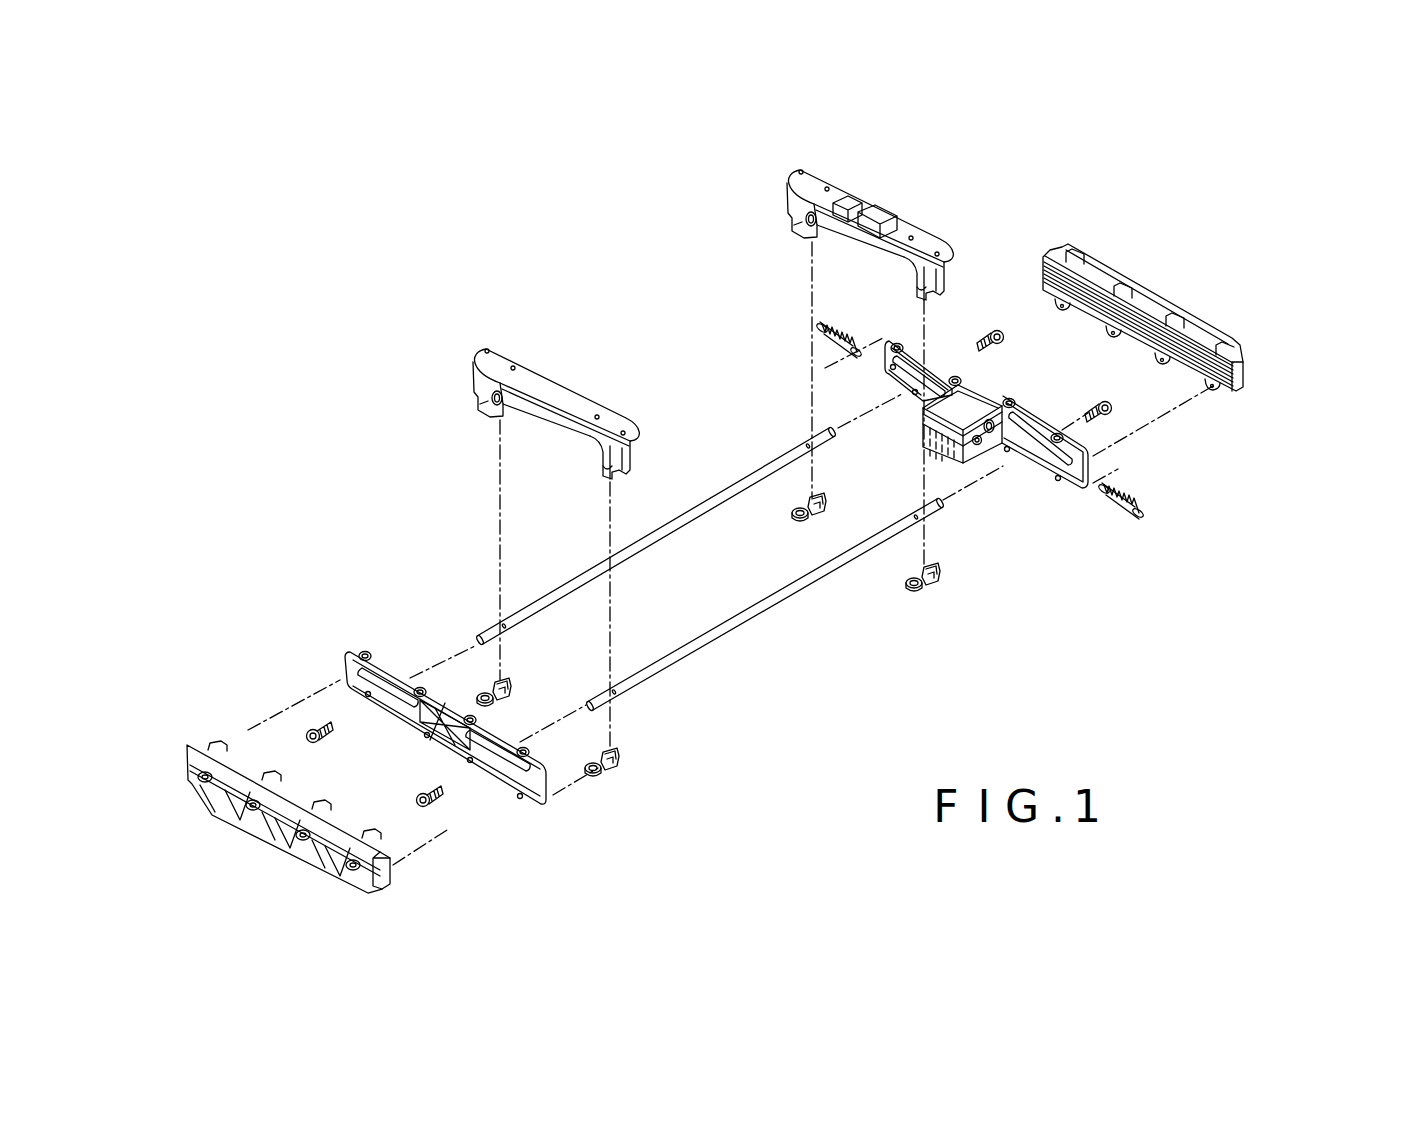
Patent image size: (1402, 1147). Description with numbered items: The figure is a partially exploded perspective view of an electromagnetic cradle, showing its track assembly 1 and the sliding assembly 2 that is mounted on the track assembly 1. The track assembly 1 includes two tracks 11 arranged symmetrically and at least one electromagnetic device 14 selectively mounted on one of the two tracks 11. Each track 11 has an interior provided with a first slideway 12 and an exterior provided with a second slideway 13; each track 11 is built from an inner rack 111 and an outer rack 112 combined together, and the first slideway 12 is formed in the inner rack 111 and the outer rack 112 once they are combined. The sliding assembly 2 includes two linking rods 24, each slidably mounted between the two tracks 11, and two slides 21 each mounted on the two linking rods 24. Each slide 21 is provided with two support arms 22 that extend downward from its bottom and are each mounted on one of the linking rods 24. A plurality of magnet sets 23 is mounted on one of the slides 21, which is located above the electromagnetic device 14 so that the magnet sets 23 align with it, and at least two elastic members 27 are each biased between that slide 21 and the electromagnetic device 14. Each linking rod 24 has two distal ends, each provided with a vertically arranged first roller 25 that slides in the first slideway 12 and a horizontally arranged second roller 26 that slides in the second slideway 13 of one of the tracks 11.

The track assembly 1 is at (765, 522).
The sliding assembly 2 is at (735, 520).
The track 11 is at (765, 568).
The first slideway 12 is at (1197, 357).
The second slideway 13 is at (1040, 473).
The electromagnetic device 14 is at (972, 455).
The slide 21 is at (647, 315).
The support arm 22 is at (480, 401).
The magnet set 23 is at (880, 222).
The linking rod 24 is at (658, 665).
The first roller 25 is at (994, 322).
The second roller 26 is at (938, 586).
The elastic member 27 is at (820, 330).
The inner rack 111 is at (340, 663).
The outer rack 112 is at (747, 568).